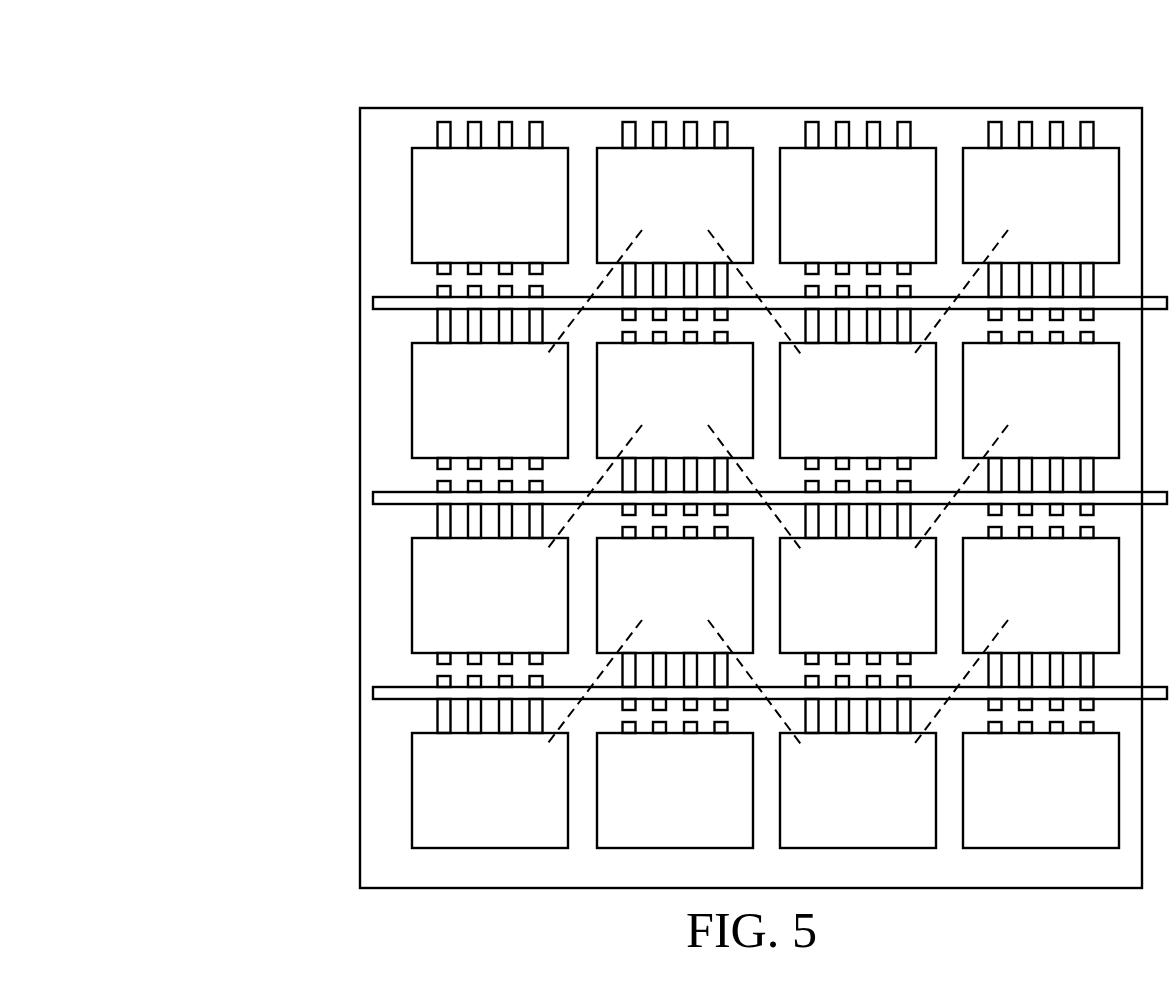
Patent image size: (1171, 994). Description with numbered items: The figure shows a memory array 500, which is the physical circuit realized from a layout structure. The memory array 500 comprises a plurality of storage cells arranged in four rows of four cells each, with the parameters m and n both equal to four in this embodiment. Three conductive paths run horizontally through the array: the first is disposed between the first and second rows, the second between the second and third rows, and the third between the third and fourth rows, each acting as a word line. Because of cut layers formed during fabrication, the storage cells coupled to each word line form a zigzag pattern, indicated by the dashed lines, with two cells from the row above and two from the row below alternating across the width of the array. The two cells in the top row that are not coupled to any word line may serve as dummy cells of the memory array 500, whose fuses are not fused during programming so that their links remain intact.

The memory array 500 is at (258, 75).